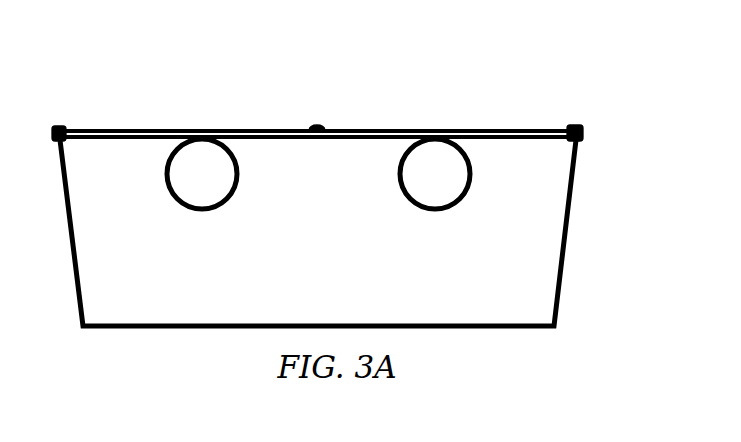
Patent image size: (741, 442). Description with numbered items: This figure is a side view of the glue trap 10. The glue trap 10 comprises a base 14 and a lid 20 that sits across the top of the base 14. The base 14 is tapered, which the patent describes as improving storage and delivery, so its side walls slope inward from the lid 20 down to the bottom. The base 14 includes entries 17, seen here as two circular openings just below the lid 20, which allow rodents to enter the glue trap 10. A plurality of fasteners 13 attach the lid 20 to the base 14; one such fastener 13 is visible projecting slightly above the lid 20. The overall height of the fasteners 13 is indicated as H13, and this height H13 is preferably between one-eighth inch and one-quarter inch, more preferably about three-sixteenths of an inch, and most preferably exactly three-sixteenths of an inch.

The glue trap 10 is at (69, 87).
The fasteners 13 is at (314, 126).
The base 14 is at (311, 213).
The entries 17 is at (217, 182).
The lid 20 is at (232, 129).
The overall height of the fasteners H13 is at (599, 160).